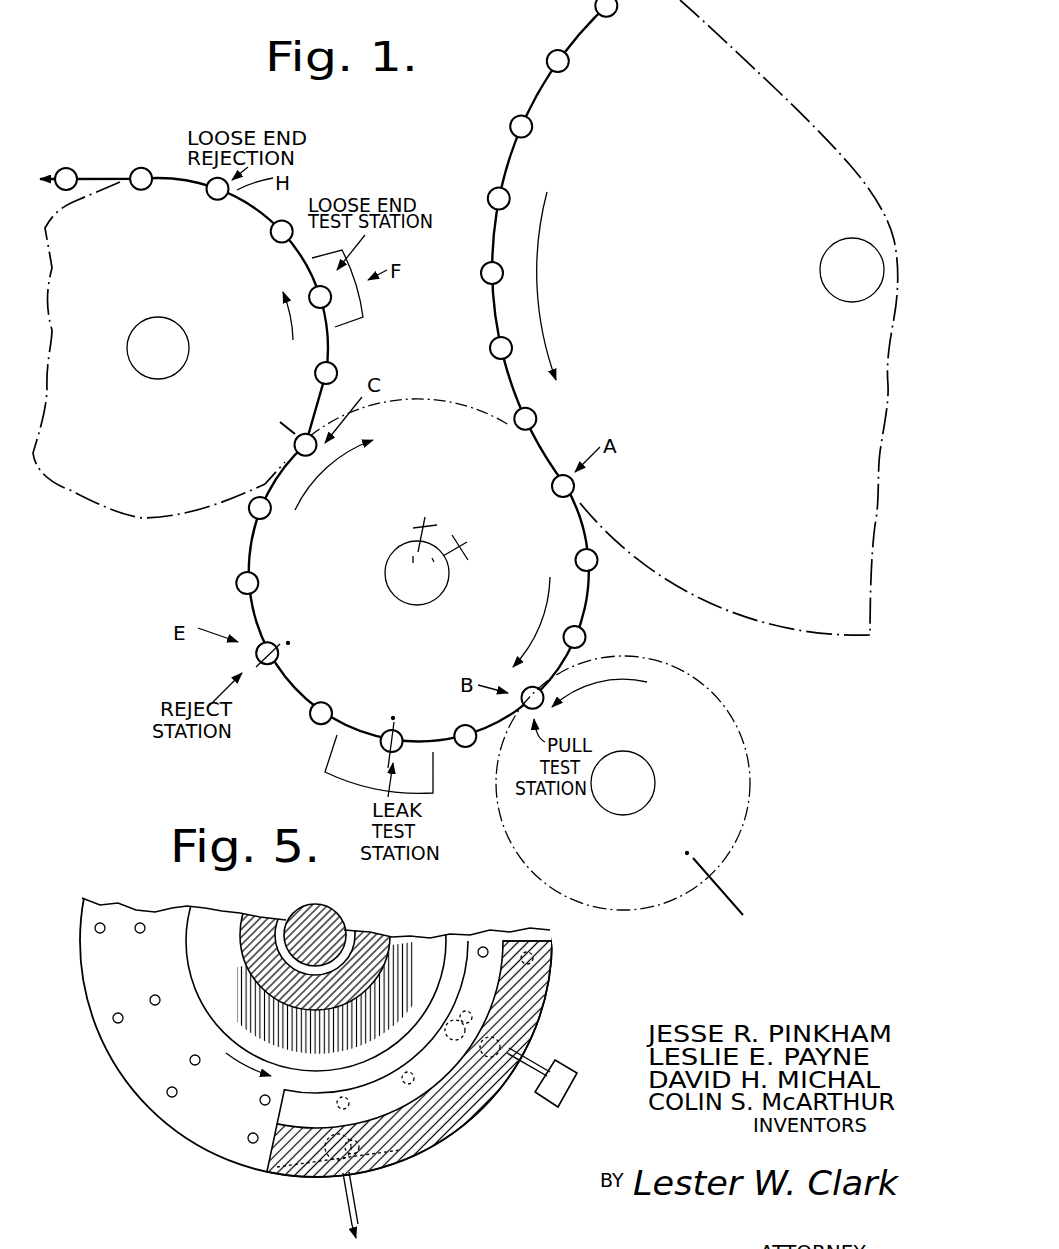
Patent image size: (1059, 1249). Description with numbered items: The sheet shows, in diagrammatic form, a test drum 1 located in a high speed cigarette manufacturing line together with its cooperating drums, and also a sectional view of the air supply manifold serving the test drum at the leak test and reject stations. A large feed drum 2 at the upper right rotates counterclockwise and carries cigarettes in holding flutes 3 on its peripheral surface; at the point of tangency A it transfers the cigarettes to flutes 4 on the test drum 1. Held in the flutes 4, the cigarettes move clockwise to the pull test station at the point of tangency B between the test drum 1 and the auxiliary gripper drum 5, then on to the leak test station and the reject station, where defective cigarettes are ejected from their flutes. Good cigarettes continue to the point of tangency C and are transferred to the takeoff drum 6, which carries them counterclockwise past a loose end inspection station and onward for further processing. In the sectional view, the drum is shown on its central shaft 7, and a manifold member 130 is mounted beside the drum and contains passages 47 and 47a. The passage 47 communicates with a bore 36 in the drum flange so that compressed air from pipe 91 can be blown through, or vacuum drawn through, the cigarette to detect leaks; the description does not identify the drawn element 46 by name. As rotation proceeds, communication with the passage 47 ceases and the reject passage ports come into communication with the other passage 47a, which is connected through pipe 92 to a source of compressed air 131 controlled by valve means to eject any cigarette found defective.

In FIG. 1, the test drum 1 is at (268, 543).
In FIG. 1, the feed drum 2 is at (500, 140).
In FIG. 1, the flutes 3 is at (490, 208).
In FIG. 1, the flutes 4 is at (451, 536).
In FIG. 1, the auxiliary gripper drum 5 is at (707, 715).
In FIG. 1, the takeoff drum 6 is at (83, 467).
In FIG. 5, the shaft 7 is at (320, 915).
In FIG. 5, the bore 36 is at (450, 1142).
In FIG. 5, the pins 46 is at (160, 1004).
In FIG. 5, the passage 47 is at (307, 1182).
In FIG. 5, the passage 47a is at (473, 1008).
In FIG. 5, the pipe 91 is at (361, 1198).
In FIG. 5, the pipe 92 is at (535, 1060).
In FIG. 5, the manifold member 130 is at (414, 1155).
In FIG. 5, the source of compressed air 131 is at (565, 1085).